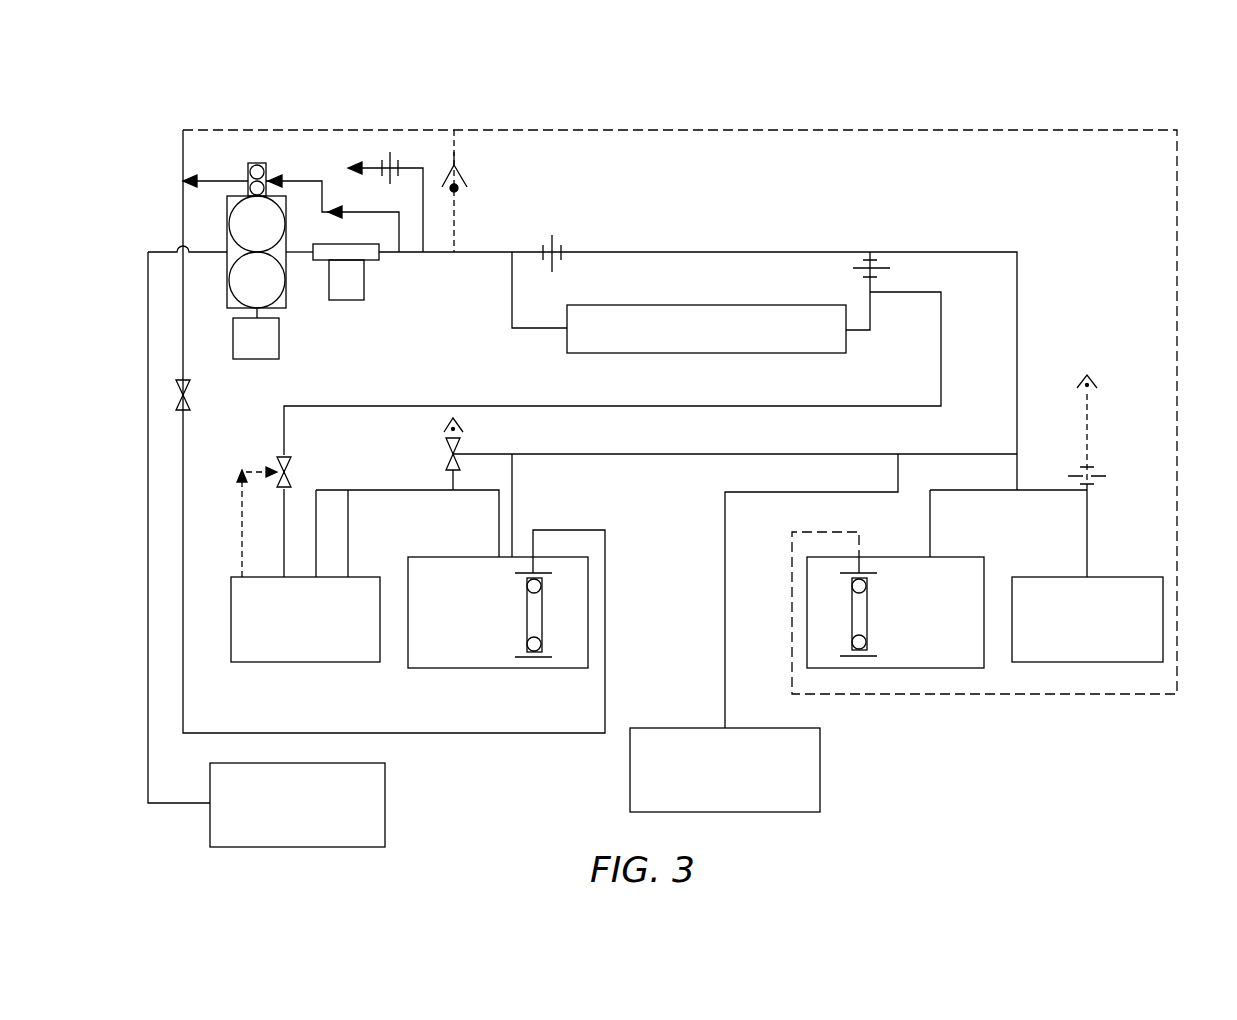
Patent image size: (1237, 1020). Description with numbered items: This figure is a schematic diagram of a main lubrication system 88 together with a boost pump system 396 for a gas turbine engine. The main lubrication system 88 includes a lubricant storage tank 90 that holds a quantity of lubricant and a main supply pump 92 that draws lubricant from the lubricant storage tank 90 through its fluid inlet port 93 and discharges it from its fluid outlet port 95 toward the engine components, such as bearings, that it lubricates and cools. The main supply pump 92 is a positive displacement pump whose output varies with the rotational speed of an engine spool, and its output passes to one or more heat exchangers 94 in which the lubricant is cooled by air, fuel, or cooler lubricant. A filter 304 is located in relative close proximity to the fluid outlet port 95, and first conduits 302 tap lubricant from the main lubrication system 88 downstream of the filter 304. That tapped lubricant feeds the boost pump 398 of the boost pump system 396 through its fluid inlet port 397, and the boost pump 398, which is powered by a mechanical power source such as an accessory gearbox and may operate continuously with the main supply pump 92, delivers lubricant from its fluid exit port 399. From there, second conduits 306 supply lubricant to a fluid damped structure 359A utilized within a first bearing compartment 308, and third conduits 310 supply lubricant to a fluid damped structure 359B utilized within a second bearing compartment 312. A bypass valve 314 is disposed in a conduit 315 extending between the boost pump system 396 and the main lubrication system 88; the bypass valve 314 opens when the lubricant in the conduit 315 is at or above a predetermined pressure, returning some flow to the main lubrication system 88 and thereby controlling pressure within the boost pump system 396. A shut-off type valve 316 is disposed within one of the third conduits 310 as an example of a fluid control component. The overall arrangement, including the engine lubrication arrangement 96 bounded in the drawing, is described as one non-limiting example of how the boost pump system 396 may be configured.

The main lubrication system 88 is at (815, 222).
The lubricant storage tank 90 is at (385, 808).
The main supply pump 92 is at (227, 292).
The fluid inlet port 93 is at (227, 247).
The heat exchanger 94 is at (714, 305).
The fluid outlet port 95 is at (287, 254).
The lubrication system 96 is at (668, 443).
The first conduits 302 is at (366, 170).
The filter 304 is at (379, 283).
The second conduits 306 is at (893, 130).
The first bearing compartment 308 is at (906, 656).
The third conduits 310 is at (183, 698).
The second bearing compartment 312 is at (483, 656).
The bypass valve 314 is at (460, 173).
The conduit 315 is at (454, 217).
The shut-off type valve 316 is at (190, 395).
The fluid damped structure 359A is at (857, 660).
The fluid damped structure 359B is at (533, 660).
The boost pump system 396 is at (650, 115).
The fluid inlet port 397 is at (268, 182).
The boost pump 398 is at (256, 163).
The fluid exit port 399 is at (243, 182).